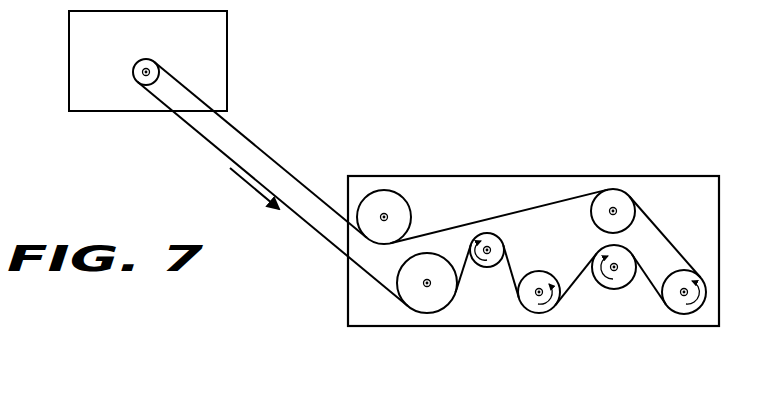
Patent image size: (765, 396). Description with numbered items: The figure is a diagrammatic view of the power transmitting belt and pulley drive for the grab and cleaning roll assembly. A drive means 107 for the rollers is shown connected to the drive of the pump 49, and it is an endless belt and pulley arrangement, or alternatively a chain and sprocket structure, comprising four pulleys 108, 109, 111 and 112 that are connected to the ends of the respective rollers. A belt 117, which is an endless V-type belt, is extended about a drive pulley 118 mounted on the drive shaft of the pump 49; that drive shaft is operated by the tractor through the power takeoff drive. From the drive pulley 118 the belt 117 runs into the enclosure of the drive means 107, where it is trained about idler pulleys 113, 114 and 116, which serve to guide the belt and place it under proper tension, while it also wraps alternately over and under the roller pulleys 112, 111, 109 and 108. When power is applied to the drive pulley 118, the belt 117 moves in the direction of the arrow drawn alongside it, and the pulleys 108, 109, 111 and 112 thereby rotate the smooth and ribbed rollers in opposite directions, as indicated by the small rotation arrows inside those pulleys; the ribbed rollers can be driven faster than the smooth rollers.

The pump 49 is at (213, 42).
The drive pulley 118 is at (139, 80).
The belt 117 is at (250, 136).
The drive means 107 is at (568, 166).
The idler pulley 114 is at (392, 197).
The idler pulley 113 is at (435, 262).
The pulley 112 is at (487, 262).
The pulley 111 is at (532, 304).
The pulley 109 is at (614, 283).
The pulley 108 is at (680, 306).
The idler pulley 116 is at (618, 196).